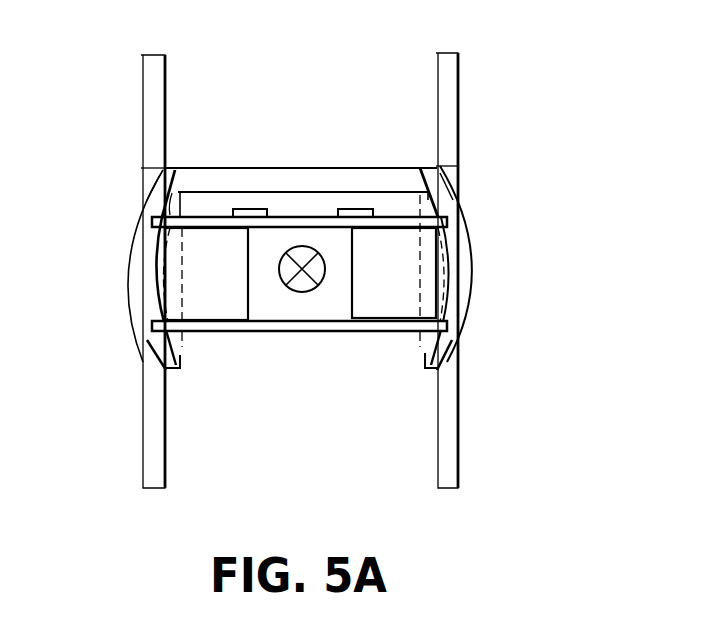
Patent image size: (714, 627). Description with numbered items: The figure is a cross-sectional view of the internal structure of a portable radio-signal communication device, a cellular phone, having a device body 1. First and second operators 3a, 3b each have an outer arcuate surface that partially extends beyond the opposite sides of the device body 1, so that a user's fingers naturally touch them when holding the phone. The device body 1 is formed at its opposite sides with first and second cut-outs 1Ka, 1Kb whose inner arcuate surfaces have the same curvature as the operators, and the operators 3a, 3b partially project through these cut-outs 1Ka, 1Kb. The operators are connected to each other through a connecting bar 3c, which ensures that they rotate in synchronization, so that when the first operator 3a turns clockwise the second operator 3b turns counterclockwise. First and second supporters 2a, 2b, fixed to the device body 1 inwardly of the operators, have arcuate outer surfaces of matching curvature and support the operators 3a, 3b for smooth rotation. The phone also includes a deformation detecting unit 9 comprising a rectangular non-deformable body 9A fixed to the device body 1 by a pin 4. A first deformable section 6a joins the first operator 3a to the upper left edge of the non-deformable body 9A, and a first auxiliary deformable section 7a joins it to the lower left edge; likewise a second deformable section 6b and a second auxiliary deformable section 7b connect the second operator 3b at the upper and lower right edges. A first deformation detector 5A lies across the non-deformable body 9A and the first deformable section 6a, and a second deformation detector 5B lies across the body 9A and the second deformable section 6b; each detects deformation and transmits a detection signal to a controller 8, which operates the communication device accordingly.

The device body 1 is at (147, 78).
The first cut-out 1Ka is at (147, 172).
The second cut-out 1Kb is at (443, 168).
The first supporter 2a is at (172, 282).
The second supporter 2b is at (430, 288).
The first operator 3a is at (140, 235).
The second operator 3b is at (472, 233).
The connecting bar 3c is at (212, 178).
The pin 4 is at (275, 284).
The first deformation detector 5A is at (245, 209).
The second deformation detector 5B is at (345, 209).
The first deformable section 6a is at (218, 229).
The second deformable section 6b is at (397, 227).
The first auxiliary deformable section 7a is at (205, 322).
The second auxiliary deformable section 7b is at (398, 327).
The controller 8 is at (345, 416).
The deformation detecting unit 9 is at (310, 312).
The non-deformable body 9A is at (334, 280).